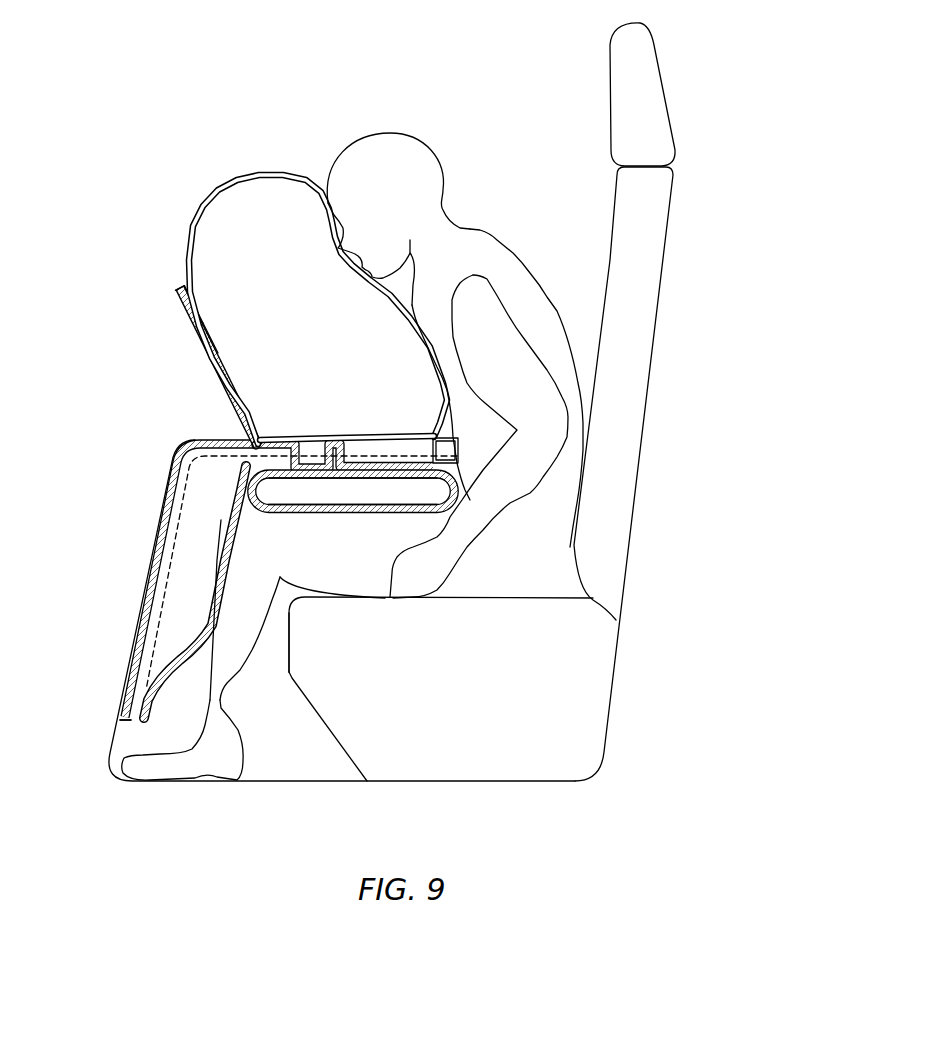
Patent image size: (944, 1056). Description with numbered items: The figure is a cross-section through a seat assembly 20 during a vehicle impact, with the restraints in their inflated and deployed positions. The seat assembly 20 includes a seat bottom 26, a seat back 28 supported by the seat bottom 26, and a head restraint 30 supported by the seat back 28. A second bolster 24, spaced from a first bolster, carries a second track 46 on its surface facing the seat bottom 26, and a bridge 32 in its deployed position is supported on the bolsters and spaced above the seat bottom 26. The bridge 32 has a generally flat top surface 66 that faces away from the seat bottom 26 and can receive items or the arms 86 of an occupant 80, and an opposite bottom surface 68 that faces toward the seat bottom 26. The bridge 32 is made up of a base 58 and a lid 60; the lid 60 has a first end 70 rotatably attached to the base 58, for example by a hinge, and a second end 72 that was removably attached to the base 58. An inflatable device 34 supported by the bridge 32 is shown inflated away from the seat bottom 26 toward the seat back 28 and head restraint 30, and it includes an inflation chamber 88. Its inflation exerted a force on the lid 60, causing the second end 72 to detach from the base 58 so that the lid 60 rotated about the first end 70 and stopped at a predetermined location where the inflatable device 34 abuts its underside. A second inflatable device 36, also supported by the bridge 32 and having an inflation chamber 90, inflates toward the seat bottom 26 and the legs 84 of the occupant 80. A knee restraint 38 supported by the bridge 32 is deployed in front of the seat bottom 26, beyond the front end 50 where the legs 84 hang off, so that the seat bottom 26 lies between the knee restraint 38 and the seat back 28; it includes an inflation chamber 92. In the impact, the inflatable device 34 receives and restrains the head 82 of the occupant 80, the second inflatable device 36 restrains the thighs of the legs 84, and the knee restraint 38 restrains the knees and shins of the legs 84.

The seat assembly 20 is at (395, 428).
The second bolster 24 is at (193, 438).
The seat bottom 26 is at (590, 697).
The seat back 28 is at (645, 268).
The head restraint 30 is at (635, 67).
The bridge 32 is at (177, 308).
The inflatable device 34 is at (250, 173).
The second inflatable device 36 is at (412, 505).
The knee restraint 38 is at (154, 593).
The second track 46 is at (153, 653).
The front end 50 is at (283, 655).
The base 58 is at (460, 480).
The lid 60 is at (190, 328).
The top surface 66 is at (203, 350).
The bottom surface 68 is at (475, 497).
The first end 70 is at (253, 445).
The second end 72 is at (176, 290).
The occupant 80 is at (477, 371).
The head 82 is at (388, 150).
The legs 84 is at (225, 697).
The arms 86 is at (530, 378).
The inflation chamber 88 is at (227, 213).
The inflation chamber 90 is at (372, 490).
The inflation chamber 92 is at (200, 547).